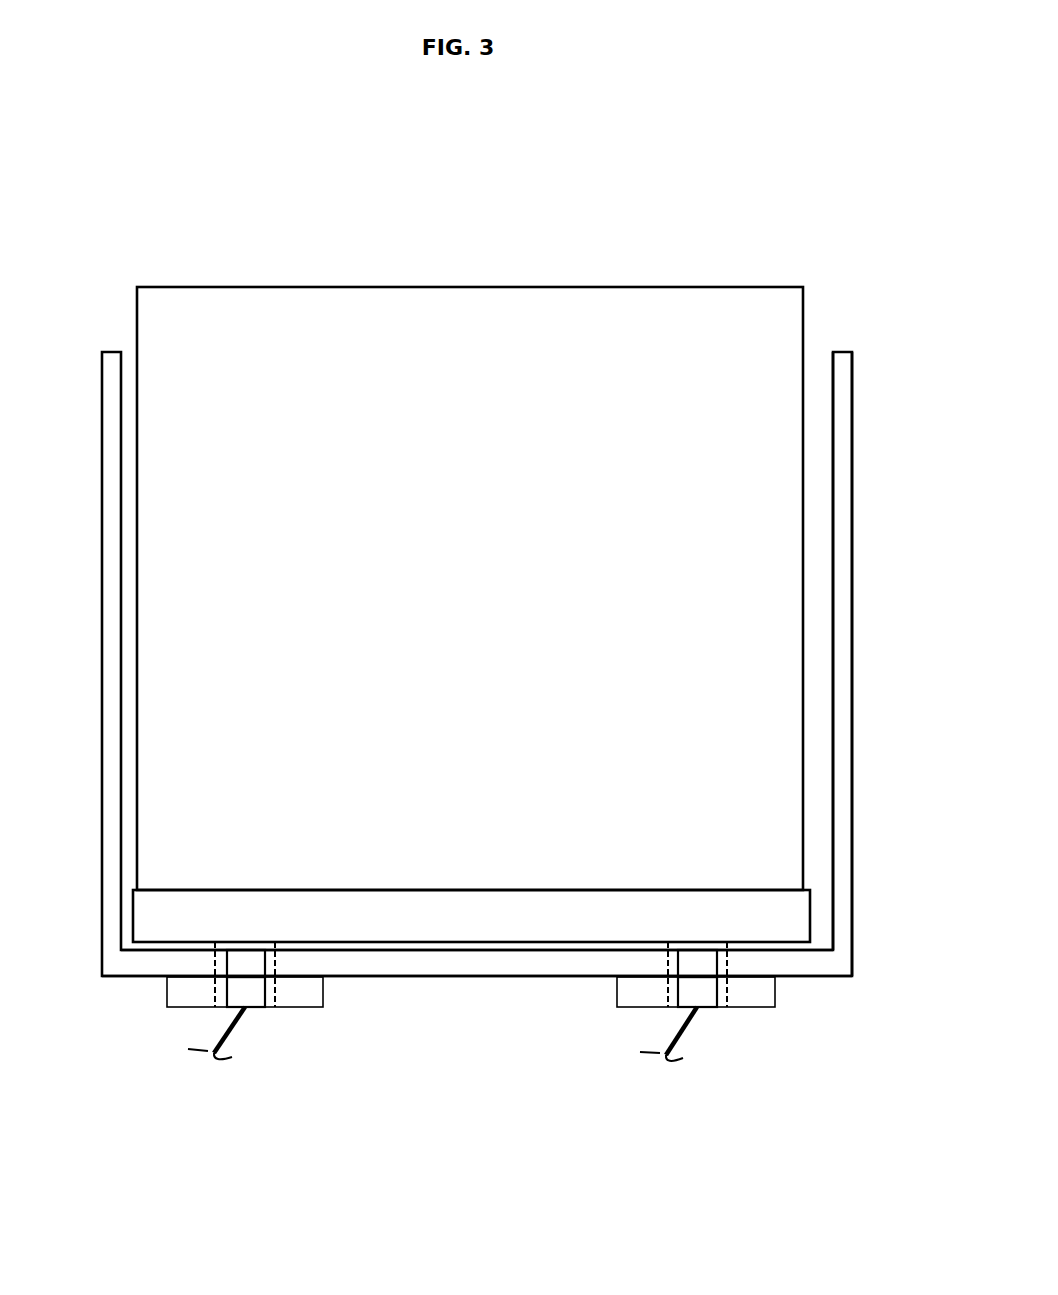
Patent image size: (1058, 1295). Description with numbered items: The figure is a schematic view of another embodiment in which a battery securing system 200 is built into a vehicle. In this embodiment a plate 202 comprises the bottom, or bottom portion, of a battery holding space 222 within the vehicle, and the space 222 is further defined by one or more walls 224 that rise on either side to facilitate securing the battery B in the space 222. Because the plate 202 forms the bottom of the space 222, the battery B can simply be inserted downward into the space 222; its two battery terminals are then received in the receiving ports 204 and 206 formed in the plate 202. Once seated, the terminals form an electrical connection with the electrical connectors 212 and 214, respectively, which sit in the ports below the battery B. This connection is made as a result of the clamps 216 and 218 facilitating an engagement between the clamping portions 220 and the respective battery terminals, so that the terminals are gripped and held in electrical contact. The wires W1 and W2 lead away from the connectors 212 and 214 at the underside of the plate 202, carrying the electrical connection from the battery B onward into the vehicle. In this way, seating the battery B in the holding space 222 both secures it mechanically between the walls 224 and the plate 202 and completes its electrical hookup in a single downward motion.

The system 200 is at (752, 104).
The plate 202 is at (424, 957).
The receiving port 204 is at (722, 962).
The receiving port 206 is at (215, 958).
The electrical connector 212 is at (661, 1013).
The electrical connector 214 is at (266, 1016).
The clamp 216 is at (643, 1001).
The clamp 218 is at (323, 1008).
The clamping portion 220 is at (215, 993).
The battery holding space 222 is at (815, 266).
The wall 224 is at (848, 815).
The battery B is at (482, 710).
The wire W1 is at (682, 1030).
The wire W2 is at (222, 1023).